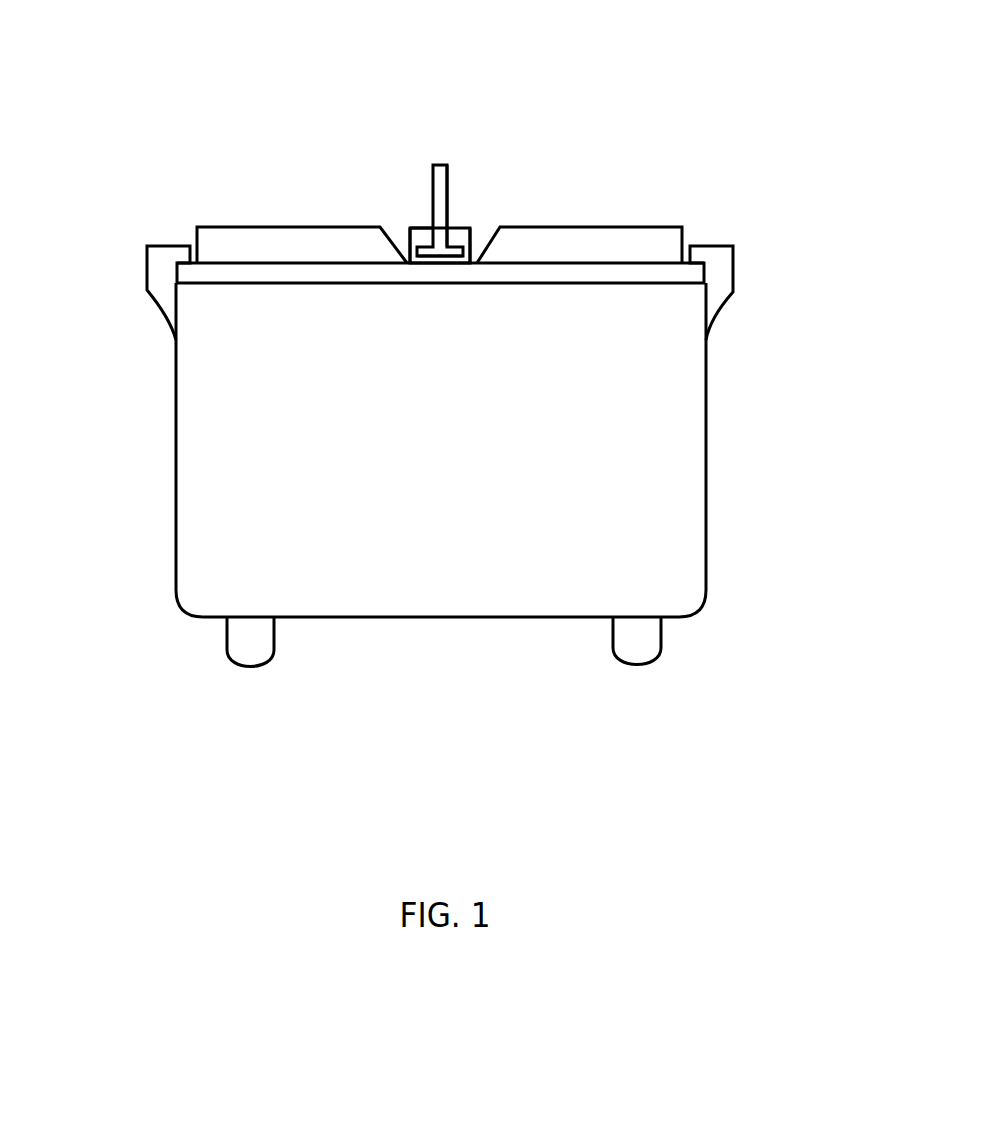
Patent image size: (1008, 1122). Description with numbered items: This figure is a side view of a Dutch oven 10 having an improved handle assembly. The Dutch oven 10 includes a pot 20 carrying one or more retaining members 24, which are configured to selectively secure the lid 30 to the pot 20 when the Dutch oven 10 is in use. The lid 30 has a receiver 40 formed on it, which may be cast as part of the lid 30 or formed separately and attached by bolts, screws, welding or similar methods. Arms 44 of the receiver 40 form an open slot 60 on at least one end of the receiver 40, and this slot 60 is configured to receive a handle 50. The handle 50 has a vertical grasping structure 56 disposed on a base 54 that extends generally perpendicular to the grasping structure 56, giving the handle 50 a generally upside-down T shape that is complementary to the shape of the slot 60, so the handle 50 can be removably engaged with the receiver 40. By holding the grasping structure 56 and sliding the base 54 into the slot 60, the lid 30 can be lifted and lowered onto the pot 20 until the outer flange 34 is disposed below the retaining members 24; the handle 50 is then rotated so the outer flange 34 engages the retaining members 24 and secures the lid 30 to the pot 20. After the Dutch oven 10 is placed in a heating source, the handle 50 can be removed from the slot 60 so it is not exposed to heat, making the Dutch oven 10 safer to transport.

The Dutch oven 10 is at (235, 111).
The pot 20 is at (712, 413).
The retaining members 24 is at (165, 253).
The lid 30 is at (670, 222).
The outer flange 34 is at (693, 272).
The receiver 40 is at (474, 218).
The arms 44 is at (427, 233).
The handle 50 is at (455, 164).
The base 54 is at (440, 243).
The grasping structure 56 is at (447, 202).
The slot 60 is at (430, 226).